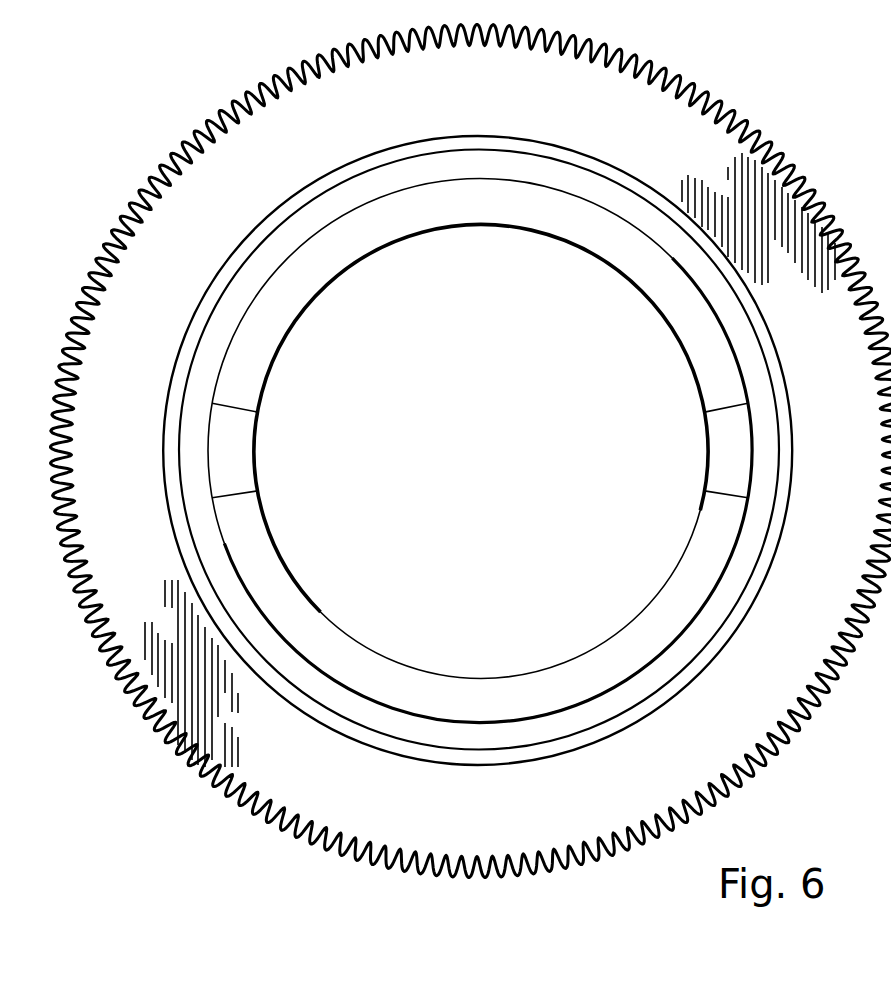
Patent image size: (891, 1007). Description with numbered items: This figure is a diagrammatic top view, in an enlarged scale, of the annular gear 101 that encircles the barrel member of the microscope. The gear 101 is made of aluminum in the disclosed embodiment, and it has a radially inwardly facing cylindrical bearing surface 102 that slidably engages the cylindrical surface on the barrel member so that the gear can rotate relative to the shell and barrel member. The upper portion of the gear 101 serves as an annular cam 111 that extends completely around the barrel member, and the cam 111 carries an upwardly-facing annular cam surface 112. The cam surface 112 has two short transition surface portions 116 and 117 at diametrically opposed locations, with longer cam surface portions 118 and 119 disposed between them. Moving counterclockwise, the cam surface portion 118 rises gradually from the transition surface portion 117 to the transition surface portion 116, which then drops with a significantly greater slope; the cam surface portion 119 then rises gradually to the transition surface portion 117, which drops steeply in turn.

The annular gear 101 is at (503, 98).
The cylindrical bearing surface 102 is at (582, 246).
The annular cam 111 is at (396, 239).
The annular cam surface 112 is at (690, 350).
The transition surface portion 116 is at (247, 470).
The transition surface portion 117 is at (714, 458).
The cam surface portion 118 is at (296, 302).
The cam surface portion 119 is at (479, 688).